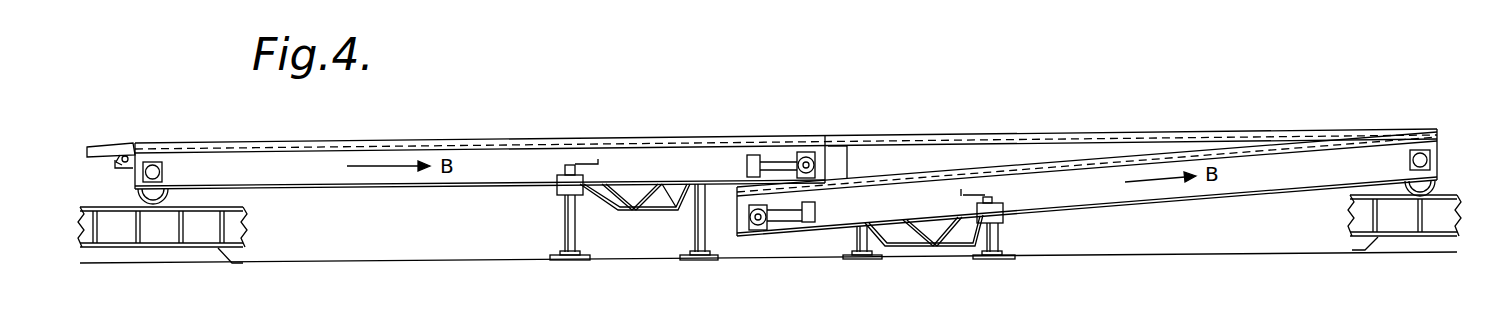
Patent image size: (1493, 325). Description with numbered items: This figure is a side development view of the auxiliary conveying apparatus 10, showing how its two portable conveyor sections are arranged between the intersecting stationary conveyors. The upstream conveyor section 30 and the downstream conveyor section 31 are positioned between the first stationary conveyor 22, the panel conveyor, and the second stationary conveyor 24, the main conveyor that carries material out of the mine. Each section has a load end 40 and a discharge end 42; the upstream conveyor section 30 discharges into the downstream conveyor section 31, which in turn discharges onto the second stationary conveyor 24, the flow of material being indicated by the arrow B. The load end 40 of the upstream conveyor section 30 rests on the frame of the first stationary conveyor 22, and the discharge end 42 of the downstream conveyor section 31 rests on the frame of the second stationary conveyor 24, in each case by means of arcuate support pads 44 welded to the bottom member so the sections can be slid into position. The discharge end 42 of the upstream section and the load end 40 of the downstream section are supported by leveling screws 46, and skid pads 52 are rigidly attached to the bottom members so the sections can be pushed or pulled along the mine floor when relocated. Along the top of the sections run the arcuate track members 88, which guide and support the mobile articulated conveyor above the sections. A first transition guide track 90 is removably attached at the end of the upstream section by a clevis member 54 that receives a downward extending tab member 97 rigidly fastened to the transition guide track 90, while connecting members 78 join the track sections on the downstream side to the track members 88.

The auxiliary conveying apparatus 10 is at (694, 122).
The first stationary conveyor 22 is at (212, 230).
The second stationary conveyor 24 is at (1405, 212).
The upstream conveyor section 30 is at (375, 178).
The downstream conveyor section 31 is at (1080, 194).
The load end 40 is at (162, 136).
The discharge end 42 is at (793, 124).
The arcuate support pads 44 is at (170, 196).
The leveling screws 46 is at (565, 222).
The skid pads 52 is at (613, 211).
The clevis members 54 is at (122, 160).
The connecting members 78 is at (836, 140).
The arcuate track members 88 is at (505, 137).
The first transition guide tracks 90 is at (127, 140).
The tab member 97 is at (98, 150).